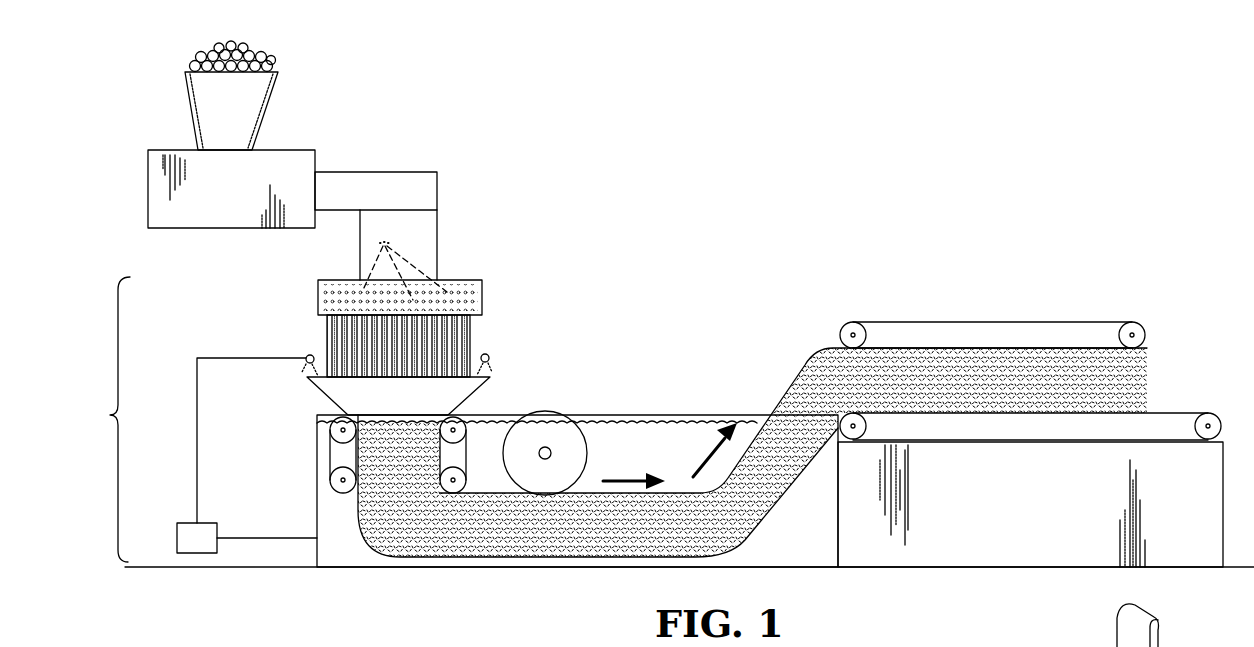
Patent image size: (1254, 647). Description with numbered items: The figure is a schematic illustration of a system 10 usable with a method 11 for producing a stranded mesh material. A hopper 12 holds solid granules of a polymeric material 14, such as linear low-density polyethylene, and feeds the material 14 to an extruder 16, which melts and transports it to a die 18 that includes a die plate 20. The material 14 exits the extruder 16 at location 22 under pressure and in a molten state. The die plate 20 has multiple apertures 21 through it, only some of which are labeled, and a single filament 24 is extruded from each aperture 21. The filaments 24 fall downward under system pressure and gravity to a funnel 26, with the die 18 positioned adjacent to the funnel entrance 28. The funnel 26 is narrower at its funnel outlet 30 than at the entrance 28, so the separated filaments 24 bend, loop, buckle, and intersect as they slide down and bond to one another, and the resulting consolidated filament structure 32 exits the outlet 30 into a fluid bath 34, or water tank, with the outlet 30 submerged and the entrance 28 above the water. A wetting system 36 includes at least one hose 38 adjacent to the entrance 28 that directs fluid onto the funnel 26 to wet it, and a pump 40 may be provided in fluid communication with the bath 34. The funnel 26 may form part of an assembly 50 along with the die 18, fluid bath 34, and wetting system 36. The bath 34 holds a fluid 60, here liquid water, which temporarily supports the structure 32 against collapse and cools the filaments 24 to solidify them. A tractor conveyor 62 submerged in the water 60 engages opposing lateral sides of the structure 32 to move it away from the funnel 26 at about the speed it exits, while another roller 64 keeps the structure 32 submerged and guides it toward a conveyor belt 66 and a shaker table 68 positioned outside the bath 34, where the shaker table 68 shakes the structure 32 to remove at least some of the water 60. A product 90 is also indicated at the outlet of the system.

The system 10 is at (789, 188).
The method 11 is at (893, 209).
The hopper 12 is at (272, 115).
The polymeric material 14 is at (232, 46).
The extruder 16 is at (239, 252).
The die 18 is at (404, 297).
The die plate 20 is at (482, 298).
The apertures 21 is at (405, 259).
The location 22 is at (325, 318).
The filaments 24 is at (350, 355).
The funnel 26 is at (320, 385).
The funnel entrance 28 is at (450, 365).
The funnel outlet 30 is at (388, 444).
The consolidated filament structure 32 is at (693, 487).
The fluid bath 34 is at (312, 545).
The wetting system 36 is at (183, 427).
The hose 38 is at (306, 362).
The pump 40 is at (185, 523).
The assembly 50 is at (106, 419).
The fluid 60 is at (697, 440).
The tractor conveyor 62 is at (462, 418).
The roller 64 is at (570, 440).
The conveyor belt 66 is at (995, 322).
The shaker table 68 is at (1172, 413).
The product 90 is at (1048, 646).